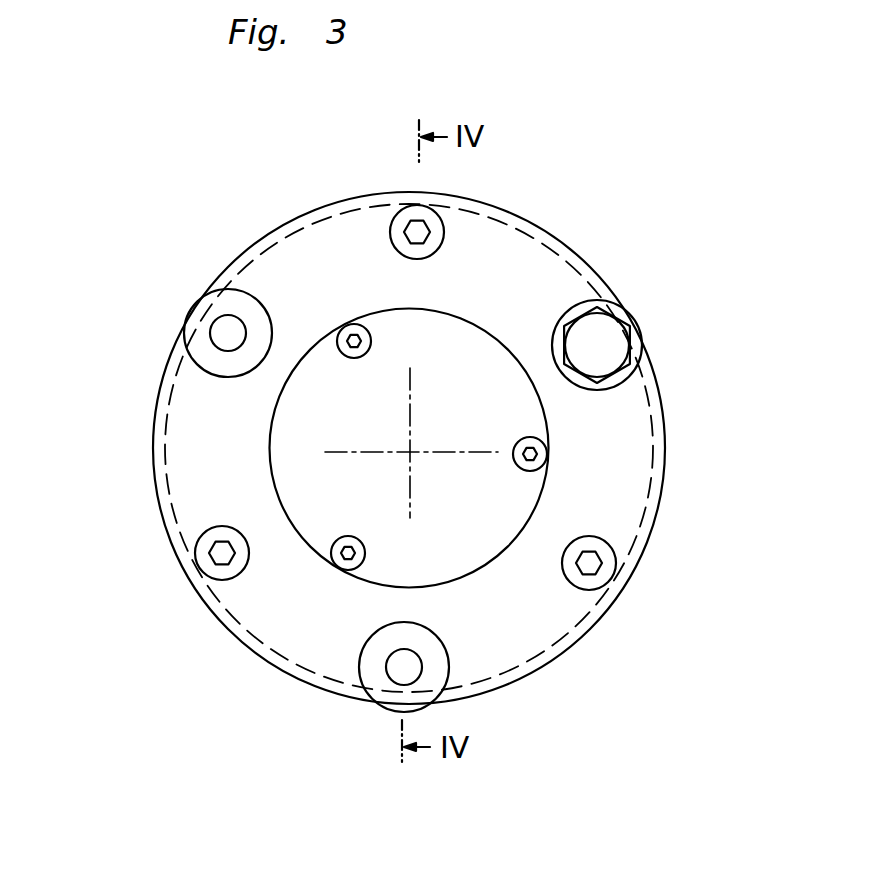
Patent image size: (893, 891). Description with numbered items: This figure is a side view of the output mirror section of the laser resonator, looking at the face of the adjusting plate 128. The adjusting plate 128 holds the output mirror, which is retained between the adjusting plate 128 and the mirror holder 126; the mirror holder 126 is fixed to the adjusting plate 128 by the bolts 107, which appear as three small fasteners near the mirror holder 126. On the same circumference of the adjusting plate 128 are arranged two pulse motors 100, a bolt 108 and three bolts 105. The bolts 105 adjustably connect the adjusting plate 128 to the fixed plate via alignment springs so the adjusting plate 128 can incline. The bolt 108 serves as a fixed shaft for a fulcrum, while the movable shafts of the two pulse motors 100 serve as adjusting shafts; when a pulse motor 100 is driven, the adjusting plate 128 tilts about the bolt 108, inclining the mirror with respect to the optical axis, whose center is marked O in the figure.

The pulse motor 100 is at (182, 336).
The bolt 105 is at (421, 229).
The bolt 107 is at (348, 334).
The bolt 108 is at (618, 343).
The mirror holder 126 is at (504, 562).
The adjusting plate 128 is at (586, 255).
The center axis O is at (408, 452).